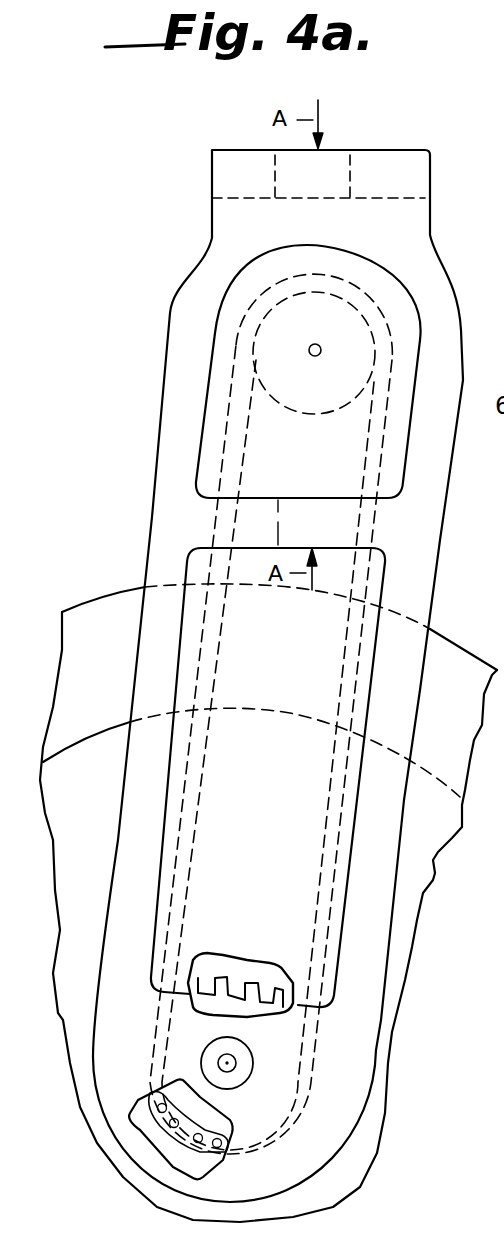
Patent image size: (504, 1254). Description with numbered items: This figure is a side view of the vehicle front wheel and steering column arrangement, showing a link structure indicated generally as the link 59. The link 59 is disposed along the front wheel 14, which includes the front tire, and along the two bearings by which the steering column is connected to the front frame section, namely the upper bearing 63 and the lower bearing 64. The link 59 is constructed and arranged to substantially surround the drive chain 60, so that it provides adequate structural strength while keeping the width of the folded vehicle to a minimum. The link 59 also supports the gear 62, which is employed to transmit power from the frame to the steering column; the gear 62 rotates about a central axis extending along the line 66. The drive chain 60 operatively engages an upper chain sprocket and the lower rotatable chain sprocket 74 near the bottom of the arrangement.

The link 59 is at (152, 356).
The upper bearing 63 is at (333, 167).
The gear 62 is at (342, 333).
The line 66 is at (314, 358).
The lower bearing 64 is at (342, 520).
The drive chain 60 is at (319, 876).
The front wheel 14 is at (98, 806).
The lower rotatable chain sprocket 74 is at (235, 1002).